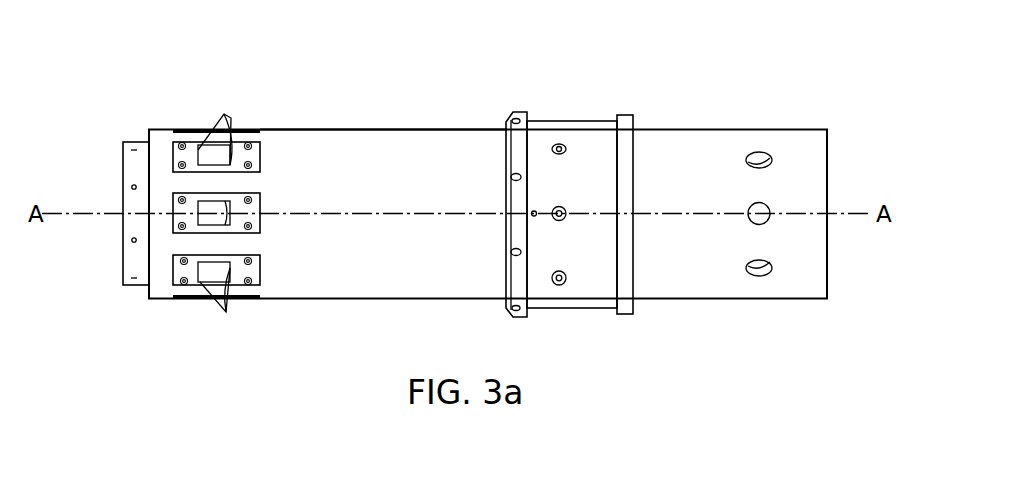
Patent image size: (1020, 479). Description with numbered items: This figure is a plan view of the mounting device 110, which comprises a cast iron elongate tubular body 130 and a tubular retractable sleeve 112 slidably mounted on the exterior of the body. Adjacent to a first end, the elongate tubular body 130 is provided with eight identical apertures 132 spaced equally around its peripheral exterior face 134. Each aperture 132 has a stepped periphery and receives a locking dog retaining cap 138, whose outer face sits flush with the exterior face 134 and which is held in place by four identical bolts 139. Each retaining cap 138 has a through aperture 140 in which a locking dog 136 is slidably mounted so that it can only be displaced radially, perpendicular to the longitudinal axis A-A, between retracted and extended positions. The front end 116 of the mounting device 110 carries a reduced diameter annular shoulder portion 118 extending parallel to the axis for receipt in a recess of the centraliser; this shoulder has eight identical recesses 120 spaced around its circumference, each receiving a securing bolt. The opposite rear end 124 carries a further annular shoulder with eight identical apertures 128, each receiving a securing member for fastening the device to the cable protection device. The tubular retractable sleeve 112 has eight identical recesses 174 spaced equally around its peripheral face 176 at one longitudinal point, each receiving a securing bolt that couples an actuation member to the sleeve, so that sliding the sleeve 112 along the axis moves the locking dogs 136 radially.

The mounting device 110 is at (488, 82).
The tubular retractable sleeve 112 is at (577, 290).
The front end 116 is at (122, 265).
The annular shoulder portion 118 is at (131, 158).
The recesses 120 is at (128, 183).
The rear end 124 is at (827, 268).
The apertures 128 is at (763, 211).
The elongate tubular body 130 is at (365, 272).
The apertures 132 is at (263, 153).
The peripheral exterior face 134 is at (380, 130).
The locking dog 136 is at (228, 118).
The locking dog retaining cap 138 is at (238, 277).
The bolts 139 is at (178, 202).
The through aperture 140 is at (235, 157).
The recesses 174 is at (553, 286).
The peripheral face 176 is at (575, 126).